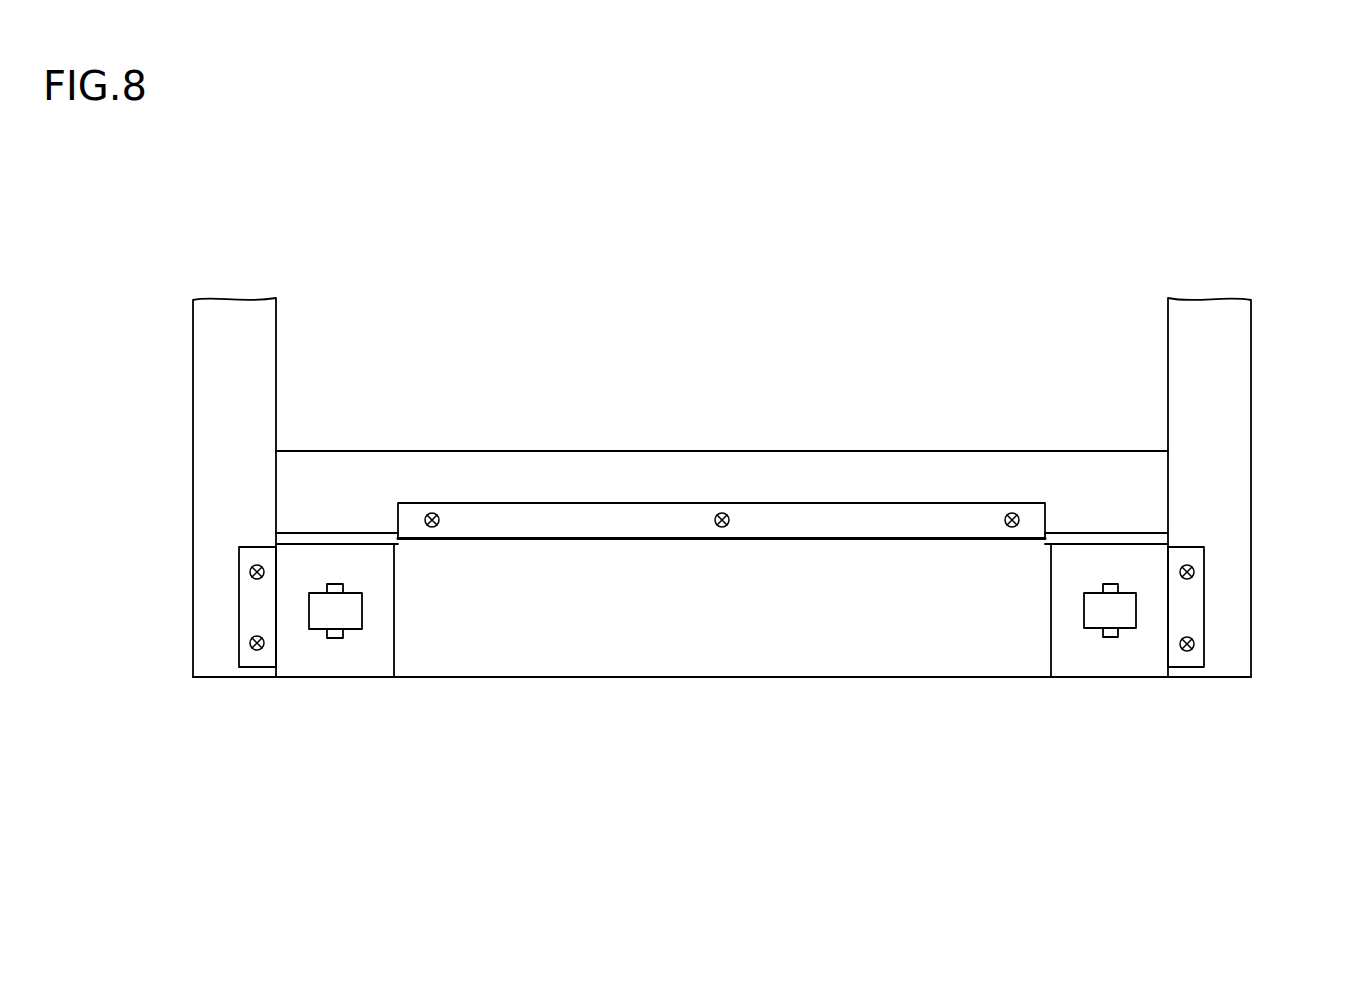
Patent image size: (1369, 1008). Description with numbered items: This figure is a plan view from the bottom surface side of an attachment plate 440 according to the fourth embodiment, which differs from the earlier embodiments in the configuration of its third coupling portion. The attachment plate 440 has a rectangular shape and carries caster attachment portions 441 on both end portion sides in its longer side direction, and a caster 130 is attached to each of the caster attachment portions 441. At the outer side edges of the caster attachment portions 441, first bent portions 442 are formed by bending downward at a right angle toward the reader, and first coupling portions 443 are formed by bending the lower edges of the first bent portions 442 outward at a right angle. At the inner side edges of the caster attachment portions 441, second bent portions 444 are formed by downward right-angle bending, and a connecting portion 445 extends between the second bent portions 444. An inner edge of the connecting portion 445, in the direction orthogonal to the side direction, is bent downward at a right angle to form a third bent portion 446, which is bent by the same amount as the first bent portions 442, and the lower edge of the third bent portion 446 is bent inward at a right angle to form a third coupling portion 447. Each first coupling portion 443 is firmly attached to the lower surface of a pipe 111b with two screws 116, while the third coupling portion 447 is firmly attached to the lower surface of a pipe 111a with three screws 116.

The pipe 111a is at (343, 451).
The pipe 111b is at (193, 354).
The screws 116 is at (432, 513).
The caster 130 is at (350, 638).
The attachment plate 440 is at (877, 696).
The caster attachment portions 441 is at (310, 657).
The first bent portions 442 is at (277, 644).
The first coupling portions 443 is at (250, 658).
The second bent portions 444 is at (394, 647).
The connecting portion 445 is at (681, 652).
The third bent portion 446 is at (627, 540).
The third coupling portion 447 is at (516, 520).